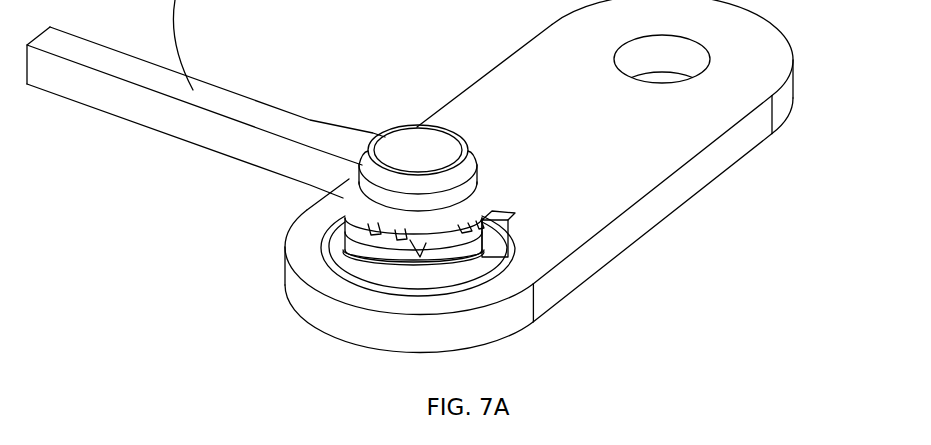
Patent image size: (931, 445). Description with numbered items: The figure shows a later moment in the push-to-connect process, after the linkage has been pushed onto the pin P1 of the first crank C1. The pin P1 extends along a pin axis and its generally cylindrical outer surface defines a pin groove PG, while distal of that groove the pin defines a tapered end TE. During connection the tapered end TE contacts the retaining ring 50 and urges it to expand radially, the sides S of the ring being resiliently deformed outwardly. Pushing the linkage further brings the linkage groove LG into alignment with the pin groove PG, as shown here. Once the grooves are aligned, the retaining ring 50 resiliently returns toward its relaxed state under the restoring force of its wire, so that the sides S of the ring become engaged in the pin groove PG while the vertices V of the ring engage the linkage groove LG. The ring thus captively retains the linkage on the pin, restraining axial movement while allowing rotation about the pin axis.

The tapered end TE is at (468, 165).
The pin groove PG is at (417, 250).
The linkage groove LG is at (508, 218).
The first crank C1 is at (636, 174).
The pin P1 is at (468, 266).
The vertices V is at (343, 198).
The retaining ring 50 is at (355, 232).
The sides S is at (377, 236).